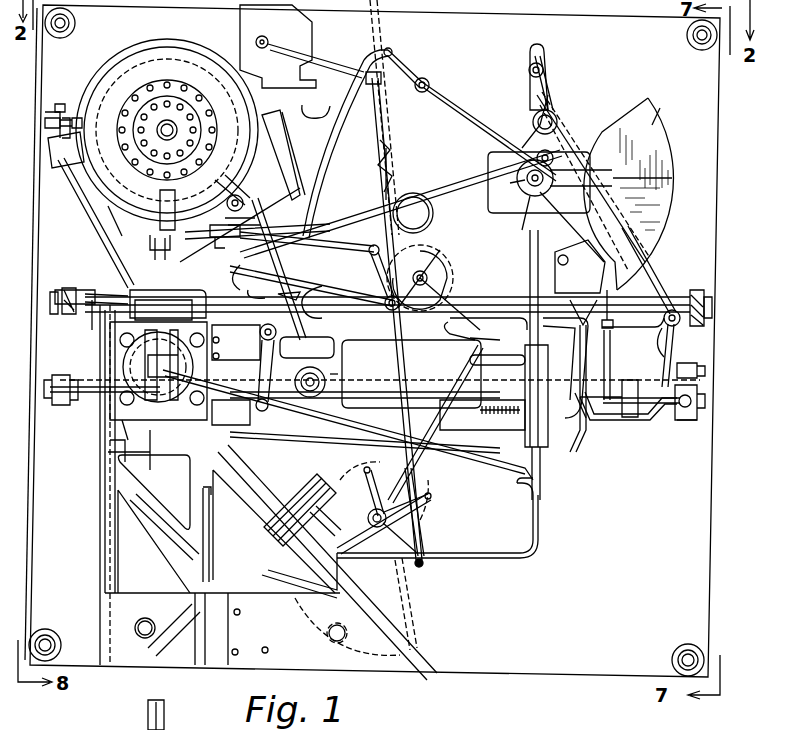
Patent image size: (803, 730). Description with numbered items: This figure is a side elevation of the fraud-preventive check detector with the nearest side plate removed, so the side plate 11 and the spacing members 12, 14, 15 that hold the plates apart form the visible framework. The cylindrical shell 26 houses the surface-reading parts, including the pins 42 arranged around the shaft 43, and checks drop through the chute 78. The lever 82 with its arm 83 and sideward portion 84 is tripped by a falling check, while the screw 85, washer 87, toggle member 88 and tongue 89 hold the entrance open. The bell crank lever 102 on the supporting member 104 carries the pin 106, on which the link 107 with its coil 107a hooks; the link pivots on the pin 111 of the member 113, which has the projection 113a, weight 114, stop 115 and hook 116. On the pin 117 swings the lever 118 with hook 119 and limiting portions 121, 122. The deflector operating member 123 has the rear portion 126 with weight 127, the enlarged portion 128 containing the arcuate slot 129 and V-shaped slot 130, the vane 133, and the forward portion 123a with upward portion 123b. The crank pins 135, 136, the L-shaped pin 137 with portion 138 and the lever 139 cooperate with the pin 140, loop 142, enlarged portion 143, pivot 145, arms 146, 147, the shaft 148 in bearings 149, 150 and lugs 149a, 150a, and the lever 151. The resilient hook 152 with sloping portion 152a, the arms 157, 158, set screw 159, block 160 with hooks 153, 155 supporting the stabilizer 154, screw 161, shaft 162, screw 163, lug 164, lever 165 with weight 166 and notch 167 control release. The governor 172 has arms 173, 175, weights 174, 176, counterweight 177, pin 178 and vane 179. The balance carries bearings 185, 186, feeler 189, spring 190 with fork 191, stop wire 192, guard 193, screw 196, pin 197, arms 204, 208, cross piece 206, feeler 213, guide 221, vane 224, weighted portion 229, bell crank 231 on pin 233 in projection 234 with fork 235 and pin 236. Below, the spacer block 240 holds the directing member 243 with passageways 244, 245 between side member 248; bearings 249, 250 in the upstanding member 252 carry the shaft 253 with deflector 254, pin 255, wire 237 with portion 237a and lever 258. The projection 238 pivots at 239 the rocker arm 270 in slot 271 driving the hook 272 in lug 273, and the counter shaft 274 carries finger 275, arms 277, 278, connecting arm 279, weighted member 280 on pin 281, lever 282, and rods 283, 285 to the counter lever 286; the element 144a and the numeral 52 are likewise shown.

The side plate 11 is at (708, 590).
The spacing member 12 is at (695, 47).
The spacing member 14 is at (48, 635).
The spacing member 15 is at (680, 652).
The cylindrical shell 26 is at (180, 45).
The pins 42 is at (188, 90).
The shaft 43 is at (178, 712).
The inner disc 52 is at (190, 118).
The chute 78 is at (112, 226).
The lever 82 is at (50, 155).
The downwardly projecting arm 83 is at (74, 198).
The sidewardly projecting portion 84 is at (110, 318).
The pin or screw 85 is at (50, 118).
The space washer 87 is at (62, 108).
The toggle joint member 88 is at (50, 110).
The tongue 89 is at (64, 112).
The bell crank lever 102 is at (228, 246).
The supporting member 104 is at (181, 204).
The pin 106 is at (290, 248).
The link 107 is at (452, 172).
The coil 107a is at (440, 216).
The pin 111 is at (560, 186).
The member 113 is at (478, 120).
The projection 113a is at (321, 102).
The weight 114 is at (672, 222).
The stop 115 is at (572, 246).
The hook 116 is at (311, 297).
The pin 117 is at (432, 84).
The lever 118 is at (398, 170).
The hook 119 is at (400, 150).
The laterally projecting portion 121 is at (396, 52).
The laterally projecting portion 122 is at (384, 84).
The deflector operating member 123 is at (478, 268).
The forwardly projecting portion 123a is at (452, 580).
The upwardly projecting portion 123b is at (365, 572).
The rearwardly projecting portion 126 is at (600, 142).
The weight 127 is at (660, 125).
The enlarged portion 128 is at (546, 440).
The arcuate slot 129 is at (610, 376).
The V-shaped slot 130 is at (480, 415).
The plate or vane 133 is at (542, 482).
The pin 135 is at (470, 182).
The pin 136 is at (534, 200).
The L-shaped pin 137 is at (528, 130).
The right angle portion 138 is at (560, 100).
The lever 139 is at (560, 118).
The pin 140 is at (545, 70).
The loop 142 is at (555, 92).
The enlarged portion 143 is at (508, 222).
The arm 144a is at (497, 276).
The pivot 145 is at (580, 262).
The arm 146 is at (652, 268).
The arm 147 is at (678, 300).
The shaft 148 is at (676, 330).
The bearing 149 is at (48, 296).
The lug 149a is at (94, 272).
The bearing 150 is at (712, 306).
The lug 150a is at (712, 296).
The lever 151 is at (86, 340).
The resilient hook 152 is at (580, 266).
The sloping portion 152a is at (488, 324).
The hook 153 is at (716, 354).
The stabilizer 154 is at (618, 430).
The lower hook 155 is at (630, 424).
The projecting arm 157 is at (700, 336).
The downwardly projecting arm 158 is at (668, 420).
The set screw 159 is at (705, 374).
The block 160 is at (705, 416).
The screw 161 is at (705, 396).
The shaft 162 is at (640, 382).
The screw 163 is at (44, 392).
The lug 164 is at (64, 400).
The right angle lever 165 is at (620, 346).
The weight 166 is at (626, 360).
The notch 167 is at (664, 284).
The governor member 172 is at (432, 254).
The arm 173 is at (350, 284).
The weight 174 is at (290, 100).
The arm 175 is at (556, 332).
The weight 176 is at (588, 456).
The counter-weight 177 is at (418, 360).
The pin 178 is at (448, 298).
The vane 179 is at (413, 213).
The bearing projection 185 is at (196, 310).
The bearing projection 186 is at (111, 451).
The feeler member 189 is at (108, 448).
The leaf spring member 190 is at (300, 404).
The fork 191 is at (226, 362).
The stop wire 192 is at (518, 444).
The guard 193 is at (469, 432).
The adjusting screw 196 is at (498, 430).
The pin 197 is at (497, 360).
The arm 204 is at (512, 446).
The cross piece 206 is at (400, 400).
The arm 208 is at (110, 365).
The feeler member 213 is at (75, 23).
The guide member 221 is at (112, 476).
The vane 224 is at (100, 292).
The weighted portion 229 is at (255, 426).
The bell crank lever 231 is at (312, 352).
The pin 233 is at (280, 304).
The projection 234 is at (262, 326).
The fork 235 is at (372, 140).
The pin 236 is at (411, 365).
The deflecting member 237 is at (212, 544).
The upper lateral portion 237a is at (232, 516).
The projection 238 is at (240, 182).
The pivot 239 is at (292, 140).
The spacer block 240 is at (428, 622).
The lower coin directing member 243 is at (100, 540).
The vertically disposed passageway 244 is at (140, 576).
The angularly disposed passageway 245 is at (282, 452).
The side member 248 is at (200, 482).
The bearing member 249 is at (166, 668).
The bearing member 250 is at (340, 458).
The upstanding member 252 is at (312, 480).
The shaft 253 is at (288, 556).
The deflecting member 254 is at (162, 536).
The pin 255 is at (154, 492).
The pivoted lever 258 is at (336, 528).
The rocker arm 270 is at (305, 190).
The slot 271 is at (236, 277).
The sliding hook member 272 is at (257, 224).
The lug 273 is at (255, 296).
The shaft 274 is at (385, 491).
The finger 275 is at (410, 582).
The arm 277 is at (382, 478).
The arm 278 is at (432, 534).
The connecting arm 279 is at (364, 456).
The weighted member 280 is at (482, 340).
The pin 281 is at (388, 308).
The lever 282 is at (360, 254).
The connecting rod 283 is at (350, 240).
The connecting rod 285 is at (442, 466).
The counter lever 286 is at (322, 60).